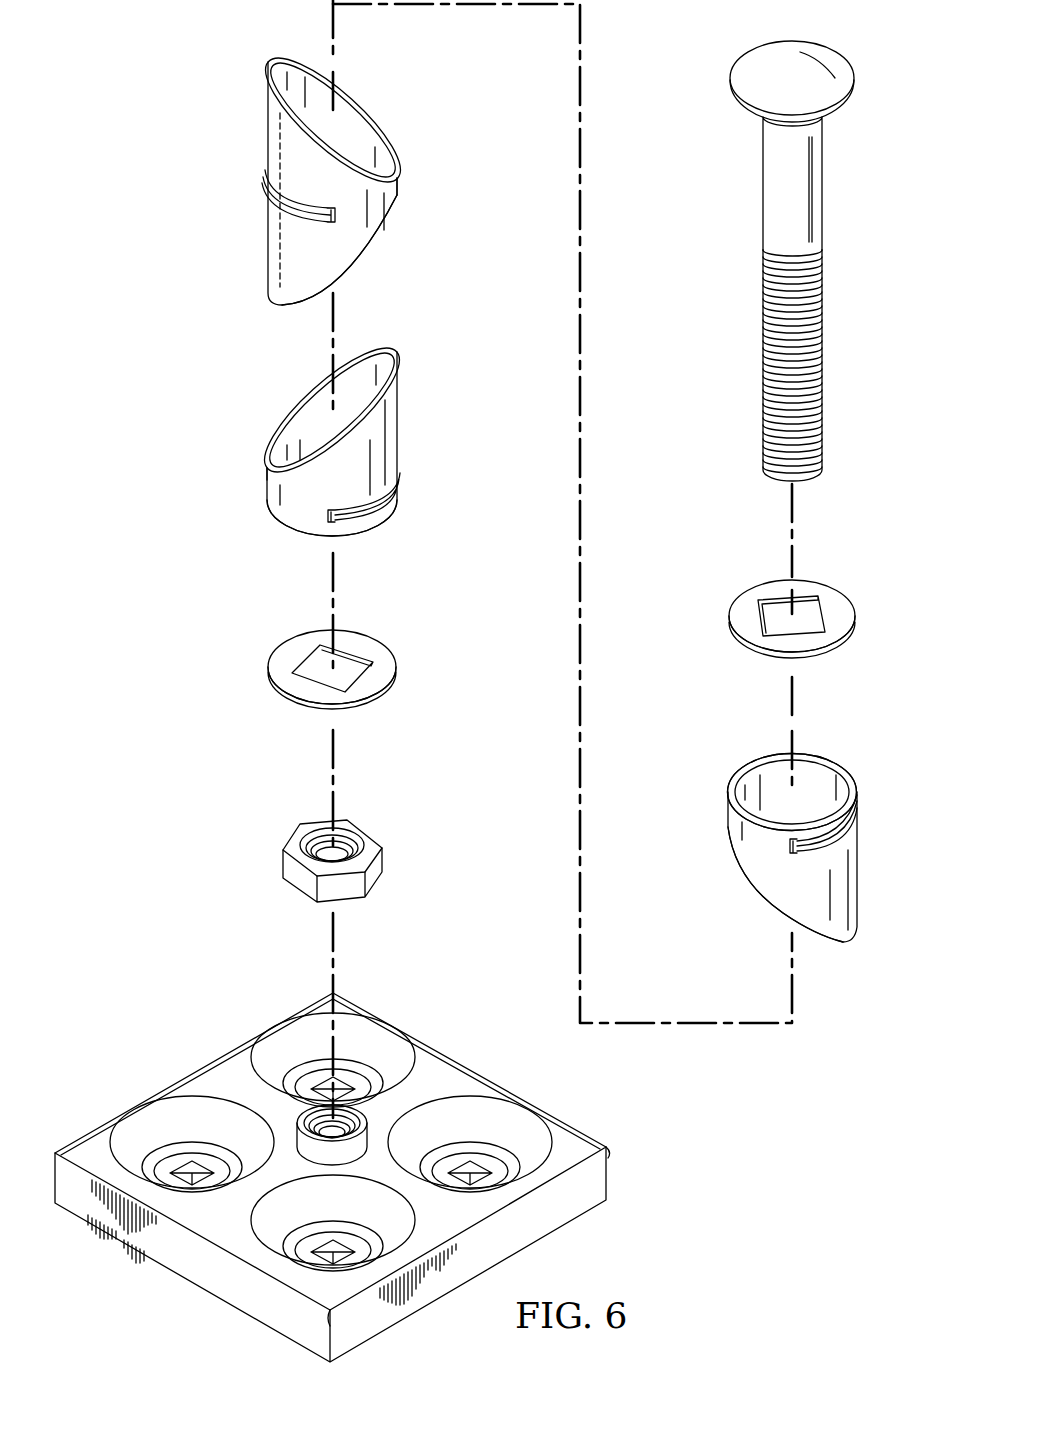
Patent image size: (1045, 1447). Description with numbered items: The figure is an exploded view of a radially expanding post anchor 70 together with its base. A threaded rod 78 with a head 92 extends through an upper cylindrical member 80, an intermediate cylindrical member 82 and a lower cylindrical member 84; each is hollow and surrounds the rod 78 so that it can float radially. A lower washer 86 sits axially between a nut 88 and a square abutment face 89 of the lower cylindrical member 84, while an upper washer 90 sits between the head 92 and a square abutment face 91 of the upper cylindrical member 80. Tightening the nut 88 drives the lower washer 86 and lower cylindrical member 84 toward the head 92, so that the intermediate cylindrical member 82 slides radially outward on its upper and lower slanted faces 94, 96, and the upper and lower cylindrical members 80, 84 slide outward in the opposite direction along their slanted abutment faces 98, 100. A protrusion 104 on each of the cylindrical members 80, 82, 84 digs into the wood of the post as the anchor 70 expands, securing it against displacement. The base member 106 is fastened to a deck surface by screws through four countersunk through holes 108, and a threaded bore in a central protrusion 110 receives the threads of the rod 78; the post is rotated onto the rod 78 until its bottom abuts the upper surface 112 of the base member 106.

The radially expanding post anchor 70 is at (490, 681).
The threaded rod 78 is at (809, 240).
The upper cylindrical member 80 is at (868, 891).
The intermediate cylindrical member 82 is at (258, 121).
The lower cylindrical member 84 is at (260, 487).
The lower washer 86 is at (269, 670).
The nut 88 is at (282, 864).
The square abutment face 89 is at (380, 549).
The upper washer 90 is at (856, 616).
The square abutment face 91 is at (845, 780).
The head 92 is at (830, 50).
The upper slanted face 94 is at (393, 172).
The lower slanted face 96 is at (380, 263).
The slanted abutment face 98 is at (745, 899).
The slanted abutment face 100 is at (273, 466).
The protrusion 104 is at (262, 185).
The base member 106 is at (332, 1177).
The countersunk through holes 108 is at (128, 1135).
The protrusion 110 is at (372, 1130).
The upper surface 112 is at (448, 1068).